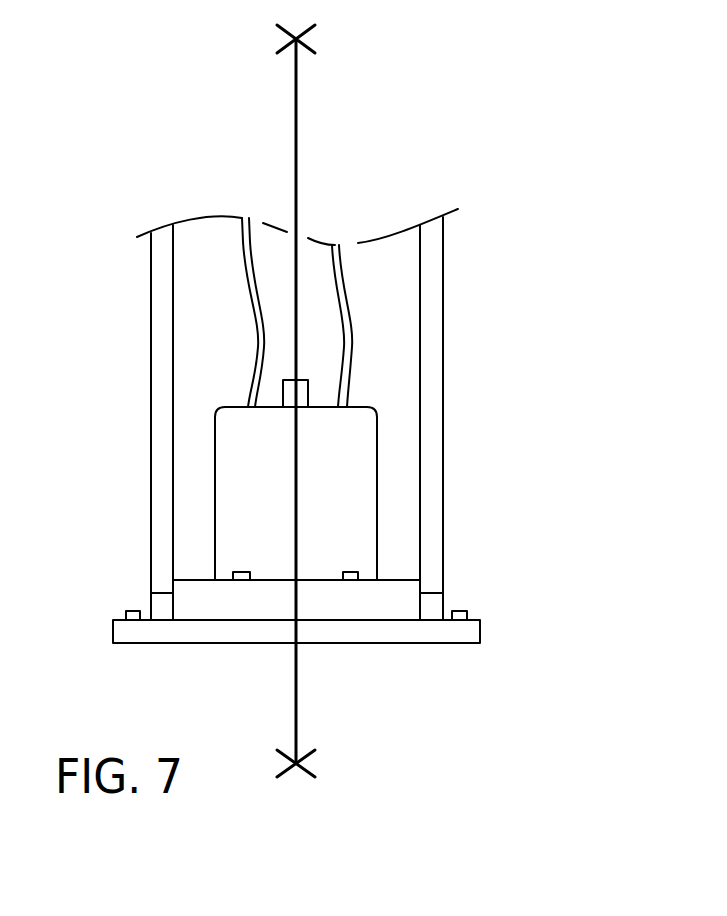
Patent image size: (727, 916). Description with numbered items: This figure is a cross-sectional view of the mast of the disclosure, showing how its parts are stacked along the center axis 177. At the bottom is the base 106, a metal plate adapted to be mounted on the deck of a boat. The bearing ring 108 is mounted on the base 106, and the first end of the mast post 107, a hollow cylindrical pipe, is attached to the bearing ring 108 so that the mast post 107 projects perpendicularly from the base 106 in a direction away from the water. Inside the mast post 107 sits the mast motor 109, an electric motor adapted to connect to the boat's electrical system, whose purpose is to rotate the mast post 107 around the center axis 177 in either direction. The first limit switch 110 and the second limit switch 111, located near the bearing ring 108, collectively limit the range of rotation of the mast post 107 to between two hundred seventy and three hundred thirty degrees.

The base 106 is at (472, 630).
The mast post 107 is at (443, 290).
The bearing ring 108 is at (393, 594).
The mast motor 109 is at (348, 433).
The first limit switch 110 is at (237, 572).
The second limit switch 111 is at (348, 570).
The center axis 177 is at (296, 698).